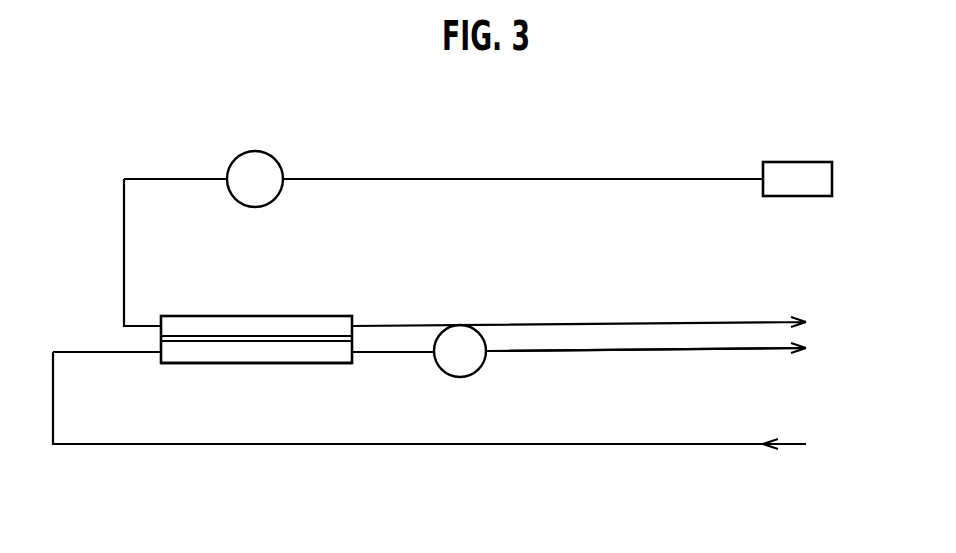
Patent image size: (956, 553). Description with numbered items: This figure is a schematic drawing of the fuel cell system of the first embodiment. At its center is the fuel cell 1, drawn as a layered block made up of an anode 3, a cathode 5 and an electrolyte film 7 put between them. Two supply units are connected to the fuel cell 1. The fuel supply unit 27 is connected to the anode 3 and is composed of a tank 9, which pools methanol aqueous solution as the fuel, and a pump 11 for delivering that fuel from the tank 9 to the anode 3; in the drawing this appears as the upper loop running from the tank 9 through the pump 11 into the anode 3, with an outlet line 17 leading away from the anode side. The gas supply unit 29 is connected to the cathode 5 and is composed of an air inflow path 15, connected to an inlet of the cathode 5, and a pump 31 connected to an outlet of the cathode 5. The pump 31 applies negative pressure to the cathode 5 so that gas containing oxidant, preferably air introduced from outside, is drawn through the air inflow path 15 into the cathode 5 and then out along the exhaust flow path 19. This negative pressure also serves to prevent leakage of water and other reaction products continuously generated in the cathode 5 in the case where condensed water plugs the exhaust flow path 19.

The fuel cell 1 is at (360, 308).
The anode 3 is at (248, 316).
The cathode 5 is at (213, 364).
The electrolyte film 7 is at (298, 345).
The tank 9 is at (799, 162).
The pump 11 is at (252, 150).
The air inflow path 15 is at (788, 446).
The anode exhaust line 17 is at (787, 320).
The exhaust flow path 19 is at (778, 350).
The fuel supply unit 27 is at (442, 172).
The gas supply unit 29 is at (537, 360).
The pump 31 is at (458, 378).